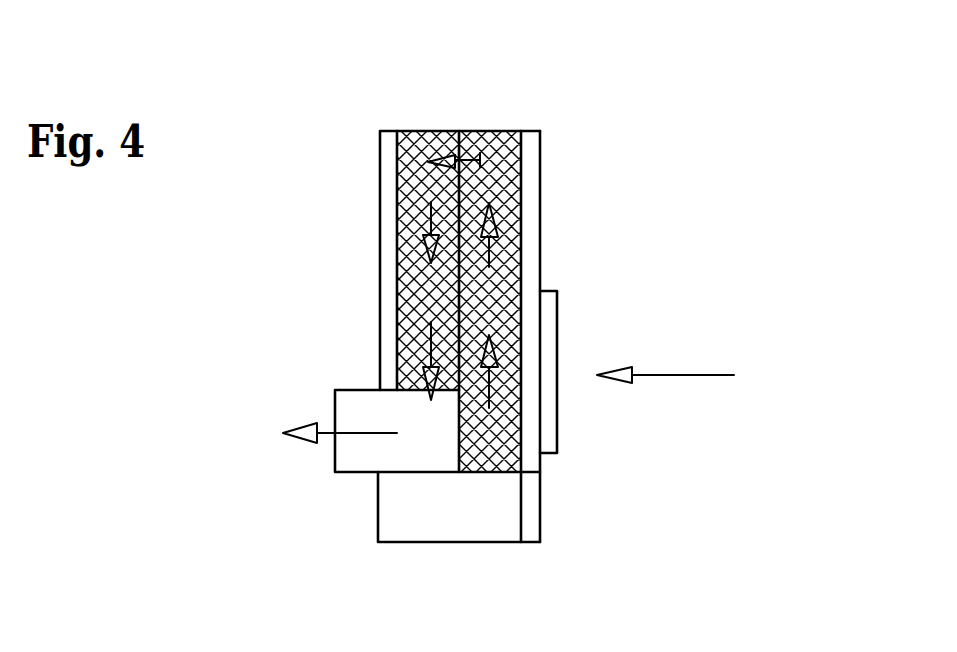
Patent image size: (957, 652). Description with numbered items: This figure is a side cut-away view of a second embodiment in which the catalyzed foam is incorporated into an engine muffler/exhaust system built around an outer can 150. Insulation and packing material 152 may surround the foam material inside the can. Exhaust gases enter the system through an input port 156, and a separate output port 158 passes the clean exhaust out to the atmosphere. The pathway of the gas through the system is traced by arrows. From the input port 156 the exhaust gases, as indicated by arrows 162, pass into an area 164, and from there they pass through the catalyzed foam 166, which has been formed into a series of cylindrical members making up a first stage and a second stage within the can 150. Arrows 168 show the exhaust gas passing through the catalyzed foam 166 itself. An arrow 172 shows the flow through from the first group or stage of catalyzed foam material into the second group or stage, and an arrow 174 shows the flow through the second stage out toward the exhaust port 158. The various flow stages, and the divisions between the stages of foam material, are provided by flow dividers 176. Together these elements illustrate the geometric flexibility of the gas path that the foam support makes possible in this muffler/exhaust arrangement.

The outer can 150 is at (542, 182).
The insulation and packing material 152 is at (542, 145).
The input port 156 is at (558, 423).
The output port 158 is at (368, 433).
The arrows 162 is at (660, 370).
The area 164 is at (443, 515).
The catalyzed foam 166 is at (517, 270).
The arrows 168 is at (522, 243).
The arrow 172 is at (480, 132).
The arrow 174 is at (427, 247).
The flow dividers 176 is at (455, 183).